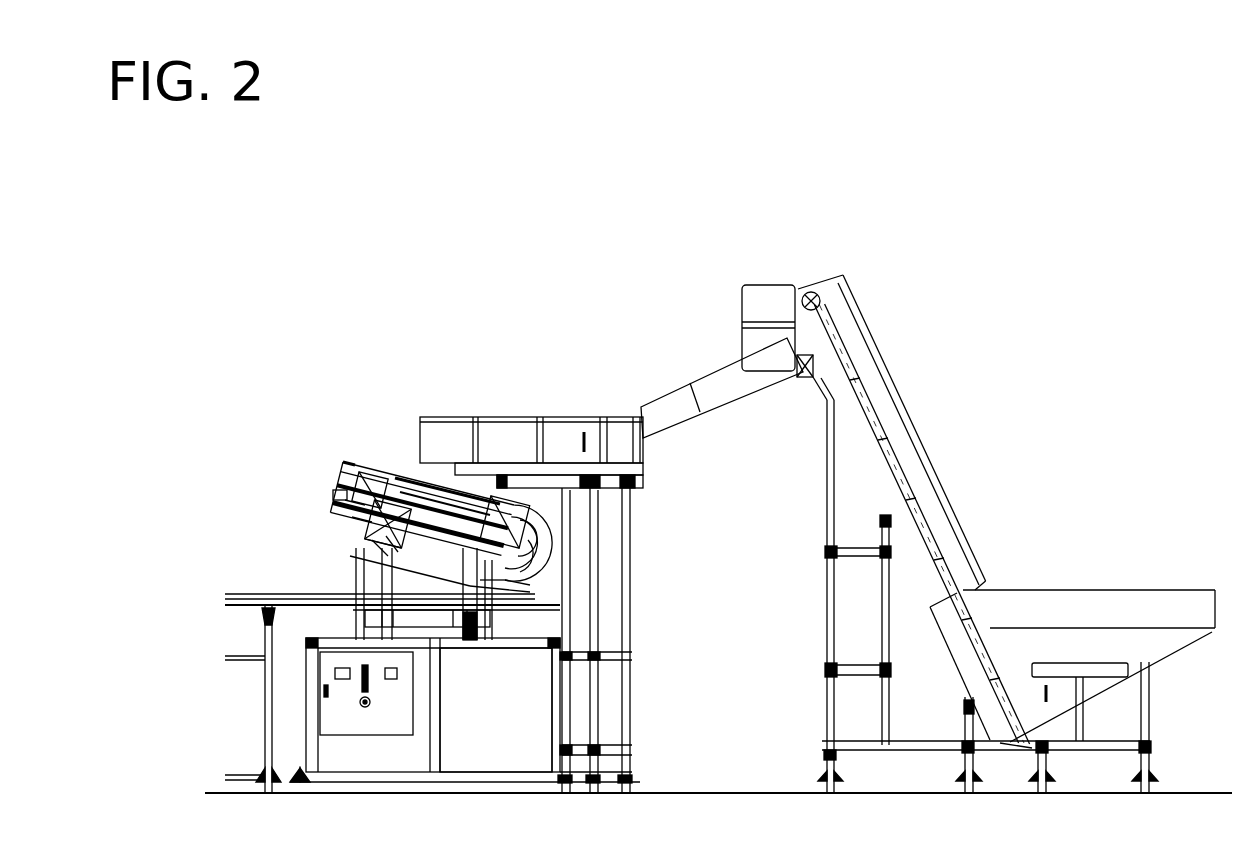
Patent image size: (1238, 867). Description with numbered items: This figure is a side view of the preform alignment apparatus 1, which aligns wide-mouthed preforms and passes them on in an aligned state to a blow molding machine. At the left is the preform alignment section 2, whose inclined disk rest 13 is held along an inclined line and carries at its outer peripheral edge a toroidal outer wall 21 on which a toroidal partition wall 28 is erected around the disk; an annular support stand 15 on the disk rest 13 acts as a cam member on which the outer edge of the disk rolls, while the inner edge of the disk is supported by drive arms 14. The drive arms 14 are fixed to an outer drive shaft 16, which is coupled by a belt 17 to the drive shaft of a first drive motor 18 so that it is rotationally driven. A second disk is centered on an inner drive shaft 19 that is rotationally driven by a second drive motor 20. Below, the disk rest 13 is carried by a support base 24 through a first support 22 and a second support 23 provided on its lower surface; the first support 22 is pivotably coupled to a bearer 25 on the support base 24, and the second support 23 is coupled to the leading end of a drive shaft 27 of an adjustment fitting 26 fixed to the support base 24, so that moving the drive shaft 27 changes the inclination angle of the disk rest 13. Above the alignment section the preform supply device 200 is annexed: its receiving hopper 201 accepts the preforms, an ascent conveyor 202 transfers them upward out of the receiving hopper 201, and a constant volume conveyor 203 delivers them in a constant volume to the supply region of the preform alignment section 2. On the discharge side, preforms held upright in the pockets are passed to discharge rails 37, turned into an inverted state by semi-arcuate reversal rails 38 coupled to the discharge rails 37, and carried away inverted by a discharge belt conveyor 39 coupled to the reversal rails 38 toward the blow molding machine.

The preform alignment apparatus 1 is at (246, 410).
The preform alignment section 2 is at (320, 430).
The disk rest 13 is at (350, 507).
The drive arms 14 is at (400, 492).
The annular support stand 15 is at (345, 490).
The outer drive shaft 16 is at (549, 479).
The belt 17 is at (352, 607).
The first drive motor 18 is at (353, 517).
The inner drive shaft 19 is at (418, 487).
The second drive motor 20 is at (500, 608).
The toroidal outer wall 21 is at (343, 495).
The first support 22 is at (540, 540).
The second support 23 is at (368, 492).
The support base 24 is at (345, 578).
The bearer 25 is at (545, 572).
The adjustment fitting 26 is at (385, 528).
The drive shaft 27 is at (367, 520).
The toroidal partition wall 28 is at (352, 470).
The discharge rails 37 is at (515, 486).
The reversal rails 38 is at (543, 557).
The discharge belt conveyor 39 is at (434, 603).
The preform supply device 200 is at (958, 365).
The receiving hopper 201 is at (1180, 602).
The ascent conveyor 202 is at (923, 520).
The constant volume conveyor 203 is at (574, 425).